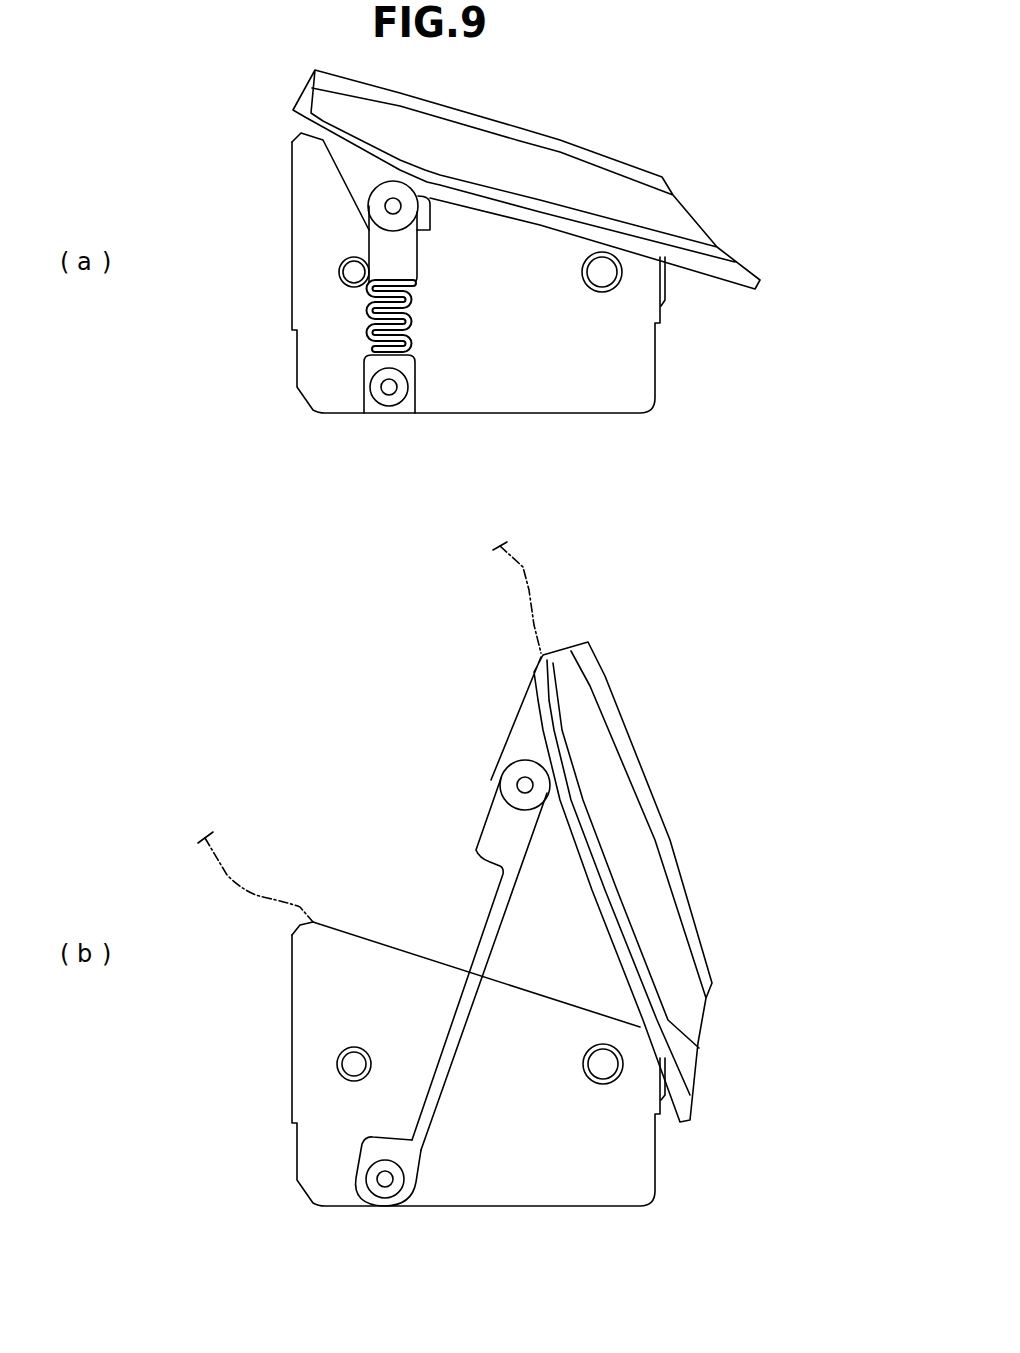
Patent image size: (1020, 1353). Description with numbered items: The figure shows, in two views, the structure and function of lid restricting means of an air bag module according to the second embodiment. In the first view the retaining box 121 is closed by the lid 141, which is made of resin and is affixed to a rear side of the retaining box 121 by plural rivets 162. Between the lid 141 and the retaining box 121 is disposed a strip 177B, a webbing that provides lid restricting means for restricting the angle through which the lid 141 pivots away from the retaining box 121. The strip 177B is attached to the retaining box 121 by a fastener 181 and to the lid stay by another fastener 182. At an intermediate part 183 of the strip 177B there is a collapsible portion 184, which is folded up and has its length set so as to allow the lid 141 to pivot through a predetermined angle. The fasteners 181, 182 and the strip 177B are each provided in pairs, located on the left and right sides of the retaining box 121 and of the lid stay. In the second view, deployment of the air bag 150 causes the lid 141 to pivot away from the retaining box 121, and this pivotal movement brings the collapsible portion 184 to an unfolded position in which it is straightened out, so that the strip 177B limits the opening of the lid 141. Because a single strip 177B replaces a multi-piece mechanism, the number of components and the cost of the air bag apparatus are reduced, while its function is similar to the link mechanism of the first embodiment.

The retaining box 121 is at (632, 370).
The lid 141 is at (543, 168).
The air bag 150 is at (523, 568).
The rivets 162 is at (354, 272).
The strip 177B is at (364, 721).
The fastener 181 is at (389, 390).
The fastener 182 is at (393, 207).
The intermediate part 183 is at (366, 327).
The collapsible portion 184 is at (366, 302).